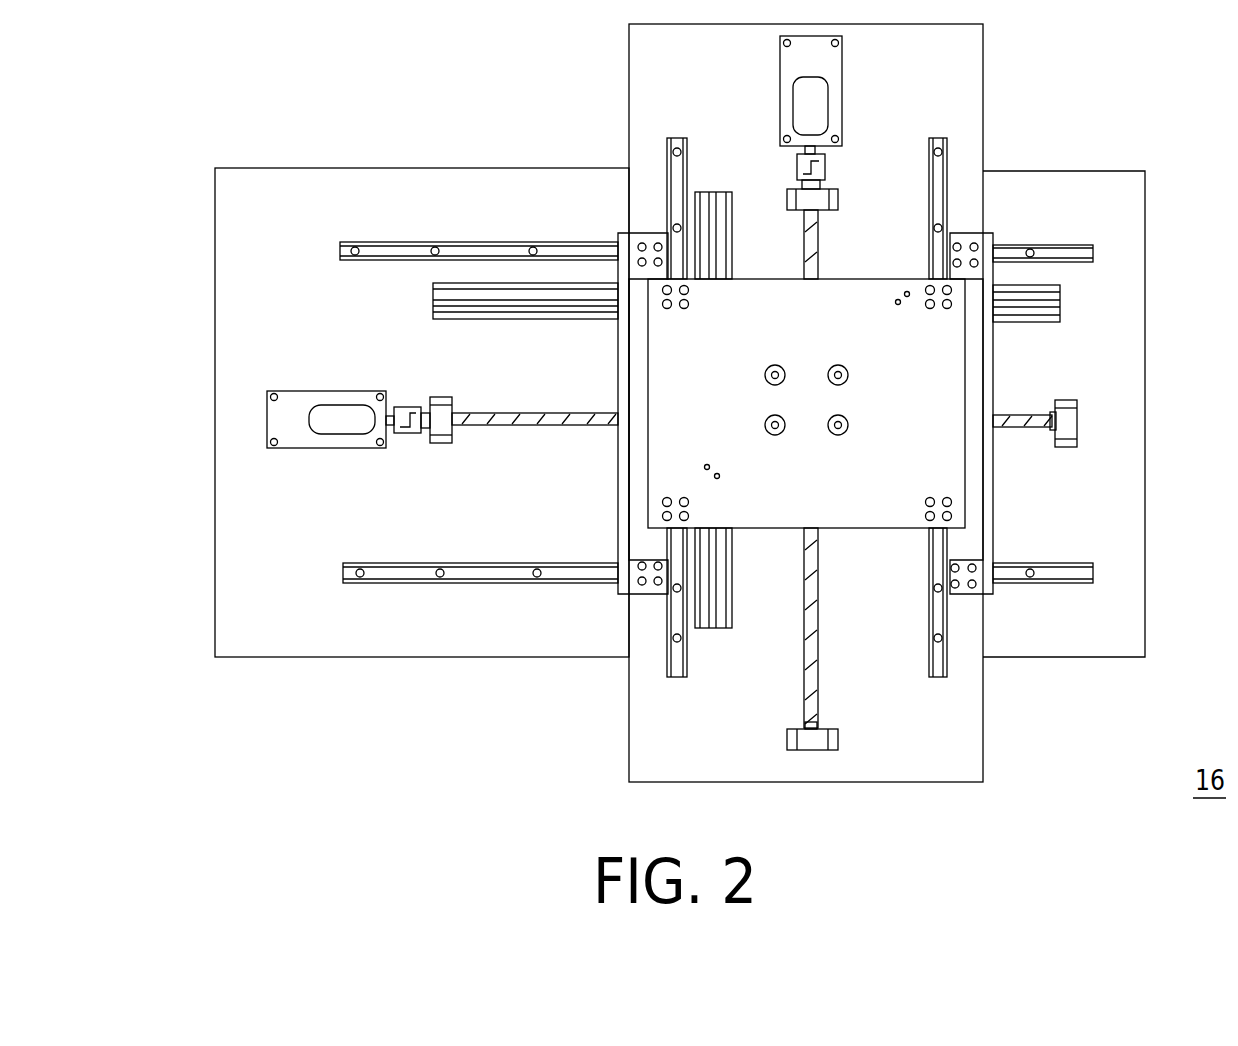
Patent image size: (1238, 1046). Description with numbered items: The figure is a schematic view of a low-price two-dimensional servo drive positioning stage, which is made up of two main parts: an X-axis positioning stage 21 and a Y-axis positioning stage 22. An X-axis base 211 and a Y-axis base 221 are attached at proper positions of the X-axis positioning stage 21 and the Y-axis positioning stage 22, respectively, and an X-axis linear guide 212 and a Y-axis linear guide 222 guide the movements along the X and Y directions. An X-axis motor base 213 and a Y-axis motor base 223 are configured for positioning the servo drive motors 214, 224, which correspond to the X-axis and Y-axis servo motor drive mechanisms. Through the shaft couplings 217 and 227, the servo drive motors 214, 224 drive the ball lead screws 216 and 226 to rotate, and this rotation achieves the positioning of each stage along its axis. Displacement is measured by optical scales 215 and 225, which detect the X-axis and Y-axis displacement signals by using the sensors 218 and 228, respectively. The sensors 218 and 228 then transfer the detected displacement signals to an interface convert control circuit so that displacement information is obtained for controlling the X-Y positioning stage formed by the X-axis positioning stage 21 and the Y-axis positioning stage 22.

The X-axis positioning stage 21 is at (231, 207).
The X-axis base 211 is at (264, 195).
The X-axis linear guide 212 is at (403, 242).
The X-axis motor base 213 is at (293, 402).
The servo drive motor 214 is at (337, 425).
The optical scale 215 is at (506, 307).
The ball lead screw 216 is at (502, 427).
The shaft coupling 217 is at (410, 428).
The sensor 218 is at (905, 298).
The Y-axis positioning stage 22 is at (962, 738).
The Y-axis base 221 is at (967, 78).
The Y-axis linear guide 222 is at (667, 140).
The Y-axis motor base 223 is at (800, 47).
The servo drive motor 224 is at (821, 119).
The optical scale 225 is at (702, 208).
The ball lead screw 226 is at (940, 228).
The shaft coupling 227 is at (818, 168).
The sensor 228 is at (717, 473).